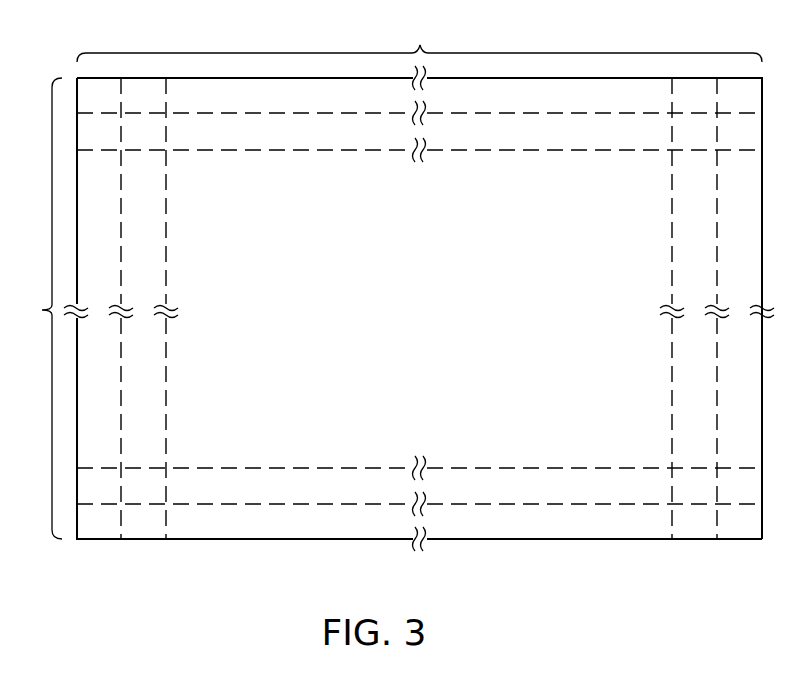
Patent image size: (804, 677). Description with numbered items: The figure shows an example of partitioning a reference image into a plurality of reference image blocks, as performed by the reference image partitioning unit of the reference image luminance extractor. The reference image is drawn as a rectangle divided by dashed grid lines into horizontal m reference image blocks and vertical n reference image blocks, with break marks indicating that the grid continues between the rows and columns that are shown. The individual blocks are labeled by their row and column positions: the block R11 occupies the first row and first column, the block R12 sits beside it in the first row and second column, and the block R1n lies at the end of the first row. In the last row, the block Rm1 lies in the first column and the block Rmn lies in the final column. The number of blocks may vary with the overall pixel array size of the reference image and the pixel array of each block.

The vertical reference image blocks count n is at (419, 41).
The horizontal reference image blocks count m is at (41, 308).
The reference image block R11 is at (99, 96).
The reference image block R12 is at (143, 96).
The reference image block R1n is at (739, 96).
The reference image block Rm1 is at (99, 522).
The reference image block Rmn is at (740, 522).